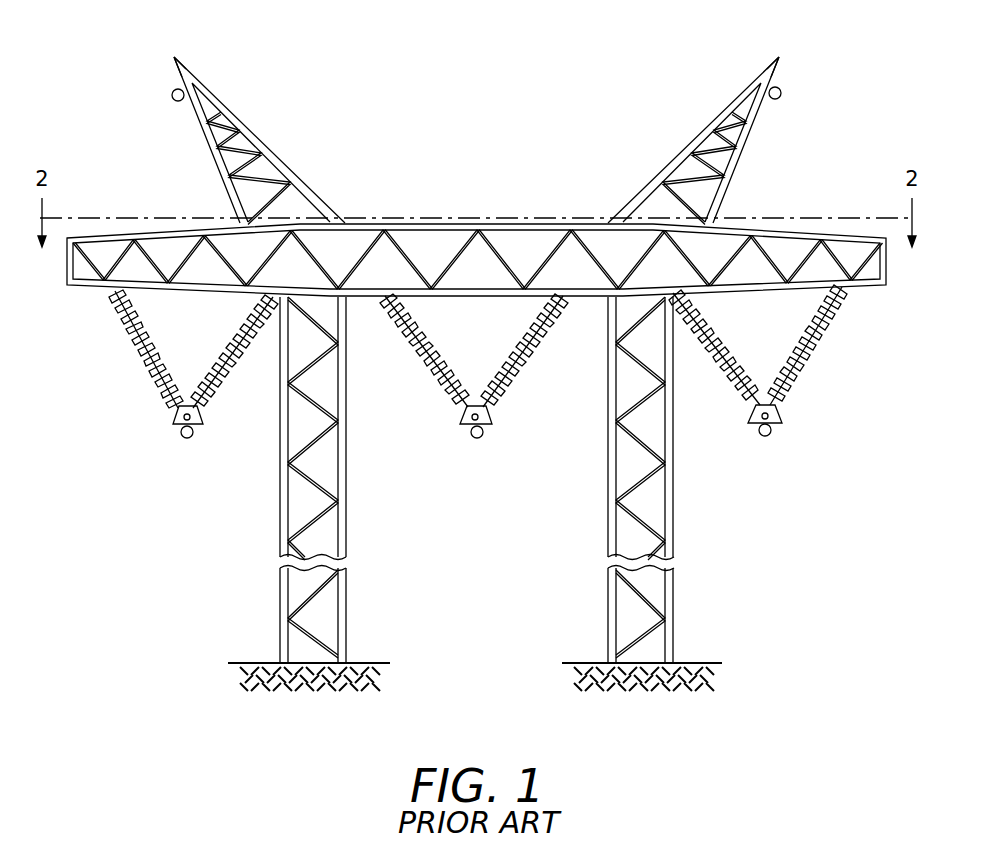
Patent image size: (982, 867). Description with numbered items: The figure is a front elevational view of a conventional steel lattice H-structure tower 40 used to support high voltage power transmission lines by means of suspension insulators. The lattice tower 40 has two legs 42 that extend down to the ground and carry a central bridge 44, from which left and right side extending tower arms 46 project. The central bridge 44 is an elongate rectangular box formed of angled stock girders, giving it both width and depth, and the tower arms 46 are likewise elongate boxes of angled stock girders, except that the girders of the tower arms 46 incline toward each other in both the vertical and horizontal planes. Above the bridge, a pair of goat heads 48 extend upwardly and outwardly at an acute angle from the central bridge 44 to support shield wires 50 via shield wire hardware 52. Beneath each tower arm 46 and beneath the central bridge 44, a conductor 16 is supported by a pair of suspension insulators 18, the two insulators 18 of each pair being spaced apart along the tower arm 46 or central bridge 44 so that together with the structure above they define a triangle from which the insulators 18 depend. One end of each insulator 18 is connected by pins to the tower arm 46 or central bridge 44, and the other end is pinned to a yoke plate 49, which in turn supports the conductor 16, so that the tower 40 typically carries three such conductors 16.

The lattice tower 40 is at (203, 542).
The legs 42 is at (342, 540).
The central bridge 44 is at (480, 255).
The tower arms 46 is at (157, 247).
The goat heads 48 is at (263, 163).
The shield wires 50 is at (172, 96).
The shield wire hardware 52 is at (177, 88).
The suspension insulators 18 is at (237, 343).
The yoke plate 49 is at (172, 418).
The conductors 16 is at (187, 440).